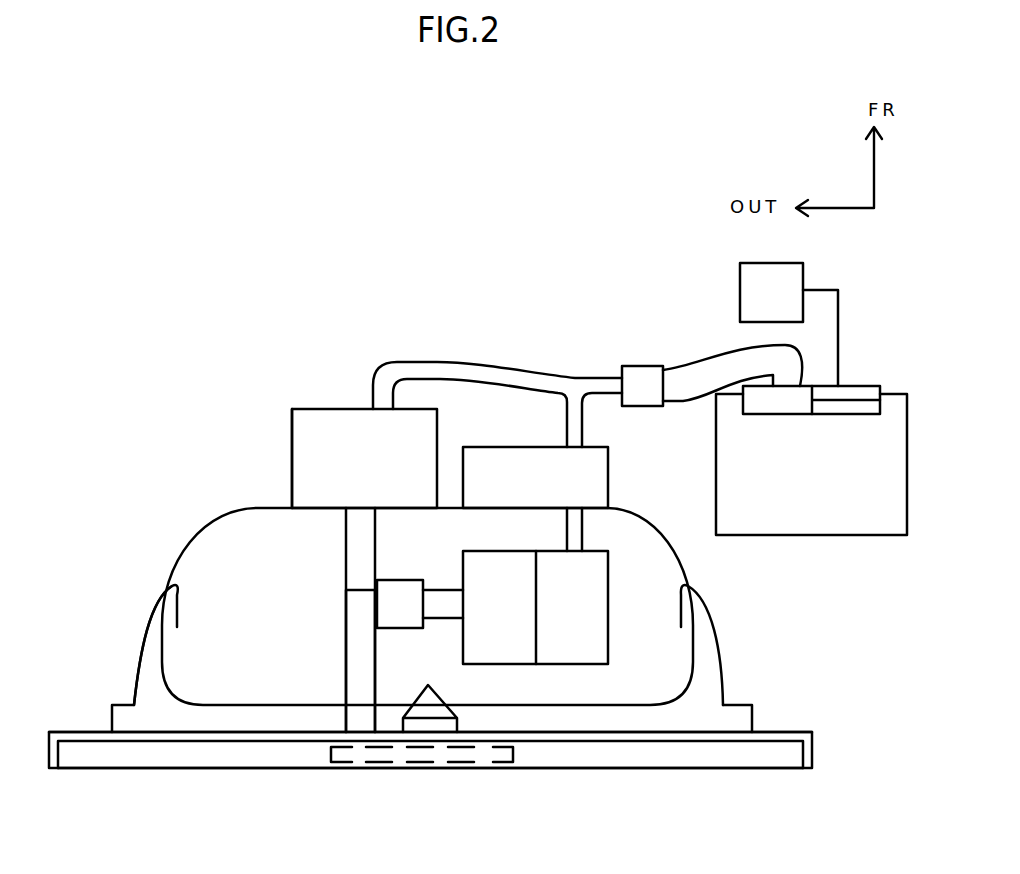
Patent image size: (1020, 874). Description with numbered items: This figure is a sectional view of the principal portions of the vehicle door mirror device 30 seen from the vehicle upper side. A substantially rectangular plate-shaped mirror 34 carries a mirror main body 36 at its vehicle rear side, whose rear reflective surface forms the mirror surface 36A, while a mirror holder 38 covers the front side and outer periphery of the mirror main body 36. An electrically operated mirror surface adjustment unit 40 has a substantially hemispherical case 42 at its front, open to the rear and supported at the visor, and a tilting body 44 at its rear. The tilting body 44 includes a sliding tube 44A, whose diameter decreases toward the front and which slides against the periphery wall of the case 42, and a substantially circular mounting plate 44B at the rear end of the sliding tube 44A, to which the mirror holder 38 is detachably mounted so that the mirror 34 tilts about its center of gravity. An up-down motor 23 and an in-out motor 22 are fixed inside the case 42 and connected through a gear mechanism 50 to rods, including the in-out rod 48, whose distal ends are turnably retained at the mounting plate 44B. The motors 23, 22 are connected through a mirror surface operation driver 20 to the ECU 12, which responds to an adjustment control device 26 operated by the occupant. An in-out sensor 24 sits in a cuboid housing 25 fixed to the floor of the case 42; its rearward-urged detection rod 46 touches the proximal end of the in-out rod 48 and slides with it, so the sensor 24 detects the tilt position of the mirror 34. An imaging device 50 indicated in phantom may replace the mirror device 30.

The ECU 12 is at (810, 537).
The mirror surface operation driver 20 is at (608, 478).
The in-out motor 22 is at (608, 620).
The up-down motor 23 is at (462, 632).
The in-out sensor 24 is at (327, 396).
The housing 25 is at (292, 457).
The adjustment control device 26 is at (740, 293).
The vehicle door mirror device 30 is at (308, 256).
The mirror 34 is at (430, 788).
The mirror main body 36 is at (278, 767).
The mirror surface 36A is at (197, 741).
The mirror holder 38 is at (75, 730).
The mirror surface adjustment unit 40 is at (138, 594).
The case 42 is at (198, 513).
The tilting body 44 is at (125, 702).
The sliding tube 44A is at (710, 607).
The mounting plate 44B is at (753, 718).
The detection rod 46 is at (345, 555).
The in-out rod 48 is at (345, 665).
The gear mechanism 50 is at (482, 762).